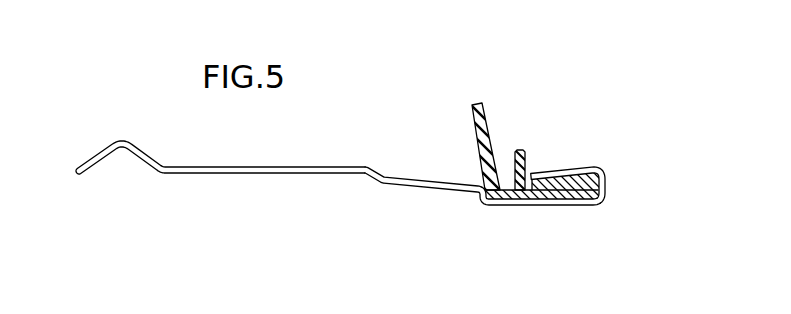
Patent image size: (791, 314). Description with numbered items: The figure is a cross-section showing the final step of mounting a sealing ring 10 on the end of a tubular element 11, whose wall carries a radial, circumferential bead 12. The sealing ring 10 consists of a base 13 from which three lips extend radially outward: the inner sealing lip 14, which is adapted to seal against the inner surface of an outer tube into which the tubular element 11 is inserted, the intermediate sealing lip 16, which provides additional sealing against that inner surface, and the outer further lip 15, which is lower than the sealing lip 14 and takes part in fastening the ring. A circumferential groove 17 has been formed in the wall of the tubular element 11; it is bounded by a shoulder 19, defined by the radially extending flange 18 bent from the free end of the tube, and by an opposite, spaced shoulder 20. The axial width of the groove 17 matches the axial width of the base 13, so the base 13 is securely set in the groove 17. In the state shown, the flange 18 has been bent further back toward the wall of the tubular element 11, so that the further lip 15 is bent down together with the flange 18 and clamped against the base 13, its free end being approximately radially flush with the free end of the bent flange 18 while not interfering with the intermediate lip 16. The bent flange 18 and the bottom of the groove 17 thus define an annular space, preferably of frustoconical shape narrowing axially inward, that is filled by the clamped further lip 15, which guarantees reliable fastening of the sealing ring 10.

The sealing ring 10 is at (491, 110).
The tubular element 11 is at (261, 166).
The radial, circumferential bead 12 is at (94, 158).
The base 13 is at (532, 199).
The sealing lip 14 is at (473, 129).
The further lip 15 is at (597, 168).
The intermediate sealing lip 16 is at (519, 151).
The circumferential groove 17 is at (500, 207).
The radially extending flange 18 is at (556, 174).
The shoulder 19 is at (586, 204).
The opposite shoulder 20 is at (480, 185).